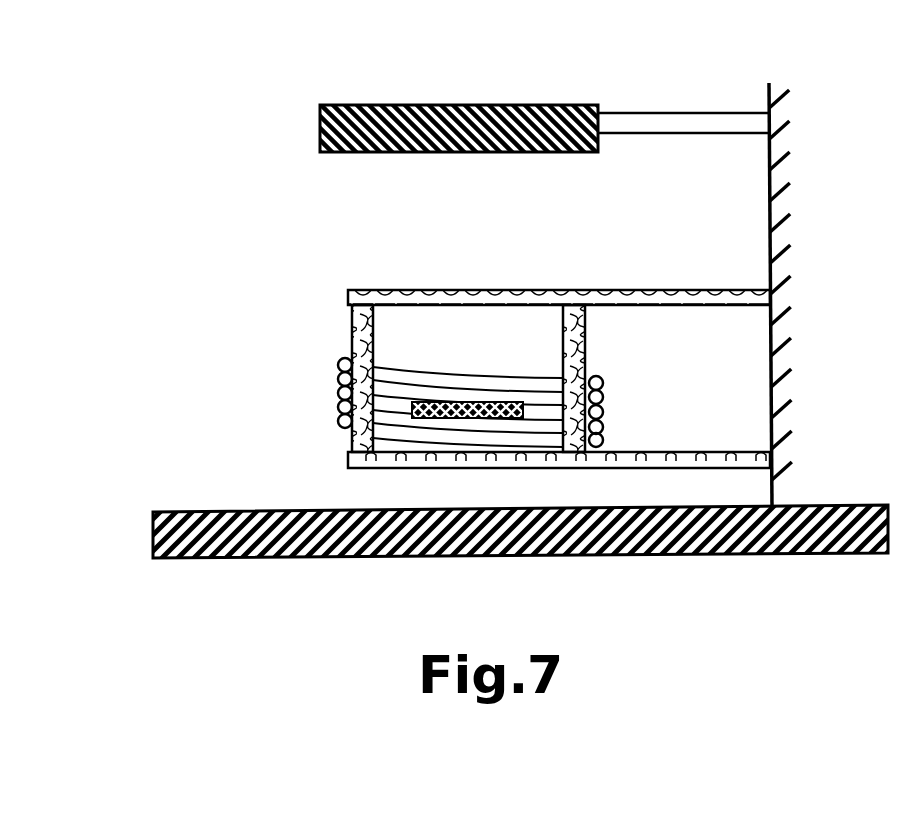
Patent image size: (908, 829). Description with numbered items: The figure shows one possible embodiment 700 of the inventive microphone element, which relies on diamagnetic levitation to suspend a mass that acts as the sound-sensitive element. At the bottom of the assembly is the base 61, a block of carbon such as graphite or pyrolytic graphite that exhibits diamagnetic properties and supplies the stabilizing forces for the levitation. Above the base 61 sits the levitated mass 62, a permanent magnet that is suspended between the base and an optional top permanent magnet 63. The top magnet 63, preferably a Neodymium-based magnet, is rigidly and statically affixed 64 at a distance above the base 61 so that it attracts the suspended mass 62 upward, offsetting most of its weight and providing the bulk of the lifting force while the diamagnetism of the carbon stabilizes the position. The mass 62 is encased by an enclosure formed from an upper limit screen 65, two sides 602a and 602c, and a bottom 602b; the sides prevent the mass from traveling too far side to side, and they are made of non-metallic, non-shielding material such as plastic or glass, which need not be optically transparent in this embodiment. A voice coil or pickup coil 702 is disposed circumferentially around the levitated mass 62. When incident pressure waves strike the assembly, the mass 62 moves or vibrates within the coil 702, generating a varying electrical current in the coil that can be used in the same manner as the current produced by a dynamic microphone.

The microphone element embodiment 700 is at (130, 62).
The top permanent magnet 63 is at (320, 120).
The static mounting 64 is at (790, 100).
The upper limit screen 65 is at (665, 290).
The enclosure side 602c is at (352, 322).
The enclosure side 602a is at (585, 328).
The enclosure bottom 602b is at (712, 452).
The pickup coil 702 is at (345, 372).
The levitated mass 62 is at (478, 400).
The base 61 is at (153, 540).